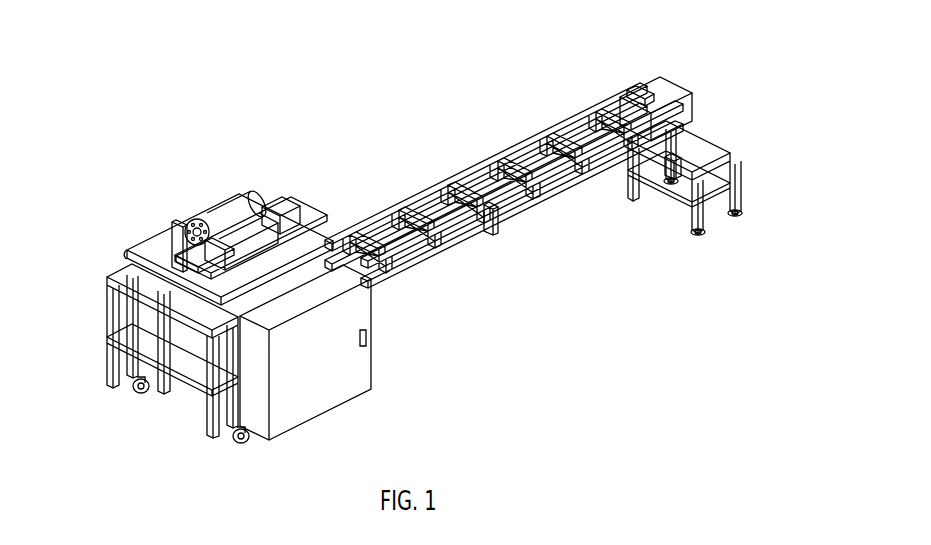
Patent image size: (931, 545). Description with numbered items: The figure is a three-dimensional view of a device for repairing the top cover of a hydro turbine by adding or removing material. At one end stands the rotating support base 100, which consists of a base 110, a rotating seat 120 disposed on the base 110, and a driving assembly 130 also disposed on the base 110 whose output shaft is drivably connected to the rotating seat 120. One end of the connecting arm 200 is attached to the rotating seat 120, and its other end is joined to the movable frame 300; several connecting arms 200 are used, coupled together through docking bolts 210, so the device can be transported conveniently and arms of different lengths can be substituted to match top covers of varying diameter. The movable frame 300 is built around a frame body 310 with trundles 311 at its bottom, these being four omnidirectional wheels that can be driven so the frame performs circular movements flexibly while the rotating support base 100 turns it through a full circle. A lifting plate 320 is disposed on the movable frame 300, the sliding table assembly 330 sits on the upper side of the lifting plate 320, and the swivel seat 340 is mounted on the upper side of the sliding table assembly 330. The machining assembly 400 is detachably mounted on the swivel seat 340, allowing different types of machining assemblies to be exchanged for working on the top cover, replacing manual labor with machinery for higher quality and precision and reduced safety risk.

The rotating support base 100 is at (713, 133).
The base 110 is at (735, 190).
The rotating seat 120 is at (677, 88).
The driving assembly 130 is at (673, 173).
The connecting arm 200 is at (427, 191).
The docking bolt 210 is at (493, 228).
The movable frame 300 is at (331, 267).
The frame body 310 is at (120, 265).
The trundles 311 is at (130, 388).
The lifting plate 320 is at (133, 247).
The sliding table assembly 330 is at (175, 228).
The swivel seat 340 is at (212, 214).
The machining assembly 400 is at (233, 210).